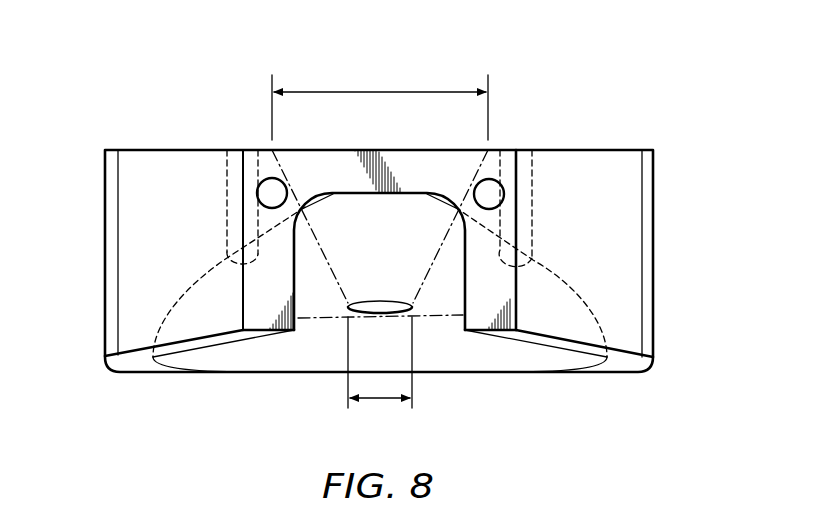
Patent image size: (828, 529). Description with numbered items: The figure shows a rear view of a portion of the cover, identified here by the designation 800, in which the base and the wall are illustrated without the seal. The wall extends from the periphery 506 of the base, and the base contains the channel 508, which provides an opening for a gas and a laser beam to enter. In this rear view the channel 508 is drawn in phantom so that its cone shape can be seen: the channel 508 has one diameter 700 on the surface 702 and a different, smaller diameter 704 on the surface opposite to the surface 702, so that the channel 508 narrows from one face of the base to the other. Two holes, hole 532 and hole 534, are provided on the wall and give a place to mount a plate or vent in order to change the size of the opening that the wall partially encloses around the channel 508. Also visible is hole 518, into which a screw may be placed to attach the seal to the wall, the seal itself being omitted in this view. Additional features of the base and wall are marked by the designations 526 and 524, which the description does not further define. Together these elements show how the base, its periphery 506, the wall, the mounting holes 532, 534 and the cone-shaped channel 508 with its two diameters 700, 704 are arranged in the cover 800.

The mounting assembly 800 is at (672, 111).
The periphery 506 is at (105, 150).
The surface 702 is at (572, 150).
The hole 532 is at (272, 193).
The hole 534 is at (489, 194).
The cylindrical boss wall 526 is at (243, 290).
The hole 518 is at (447, 277).
The channel 508 is at (338, 285).
The base plate 524 is at (307, 372).
The diameter 700 is at (380, 92).
The diameter 704 is at (380, 398).